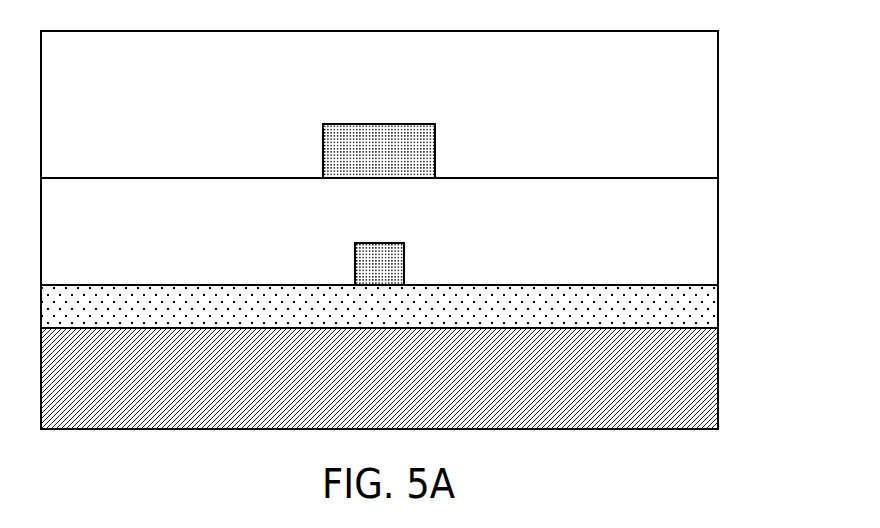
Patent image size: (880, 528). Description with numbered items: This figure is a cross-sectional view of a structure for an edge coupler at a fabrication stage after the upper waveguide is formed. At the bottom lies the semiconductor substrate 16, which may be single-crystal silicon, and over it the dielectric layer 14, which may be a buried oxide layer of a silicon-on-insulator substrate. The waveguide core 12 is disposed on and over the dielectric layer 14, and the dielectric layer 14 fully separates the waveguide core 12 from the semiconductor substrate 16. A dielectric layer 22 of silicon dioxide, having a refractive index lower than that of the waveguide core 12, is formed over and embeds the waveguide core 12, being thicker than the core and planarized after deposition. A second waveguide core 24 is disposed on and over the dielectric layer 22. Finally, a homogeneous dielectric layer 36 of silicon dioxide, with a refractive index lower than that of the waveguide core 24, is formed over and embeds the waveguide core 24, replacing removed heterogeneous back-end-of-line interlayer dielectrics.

The waveguide core 12 is at (382, 273).
The dielectric layer 14 is at (685, 306).
The semiconductor substrate 16 is at (690, 396).
The dielectric layer 22 is at (683, 232).
The waveguide core 24 is at (395, 152).
The dielectric layer 36 is at (683, 88).